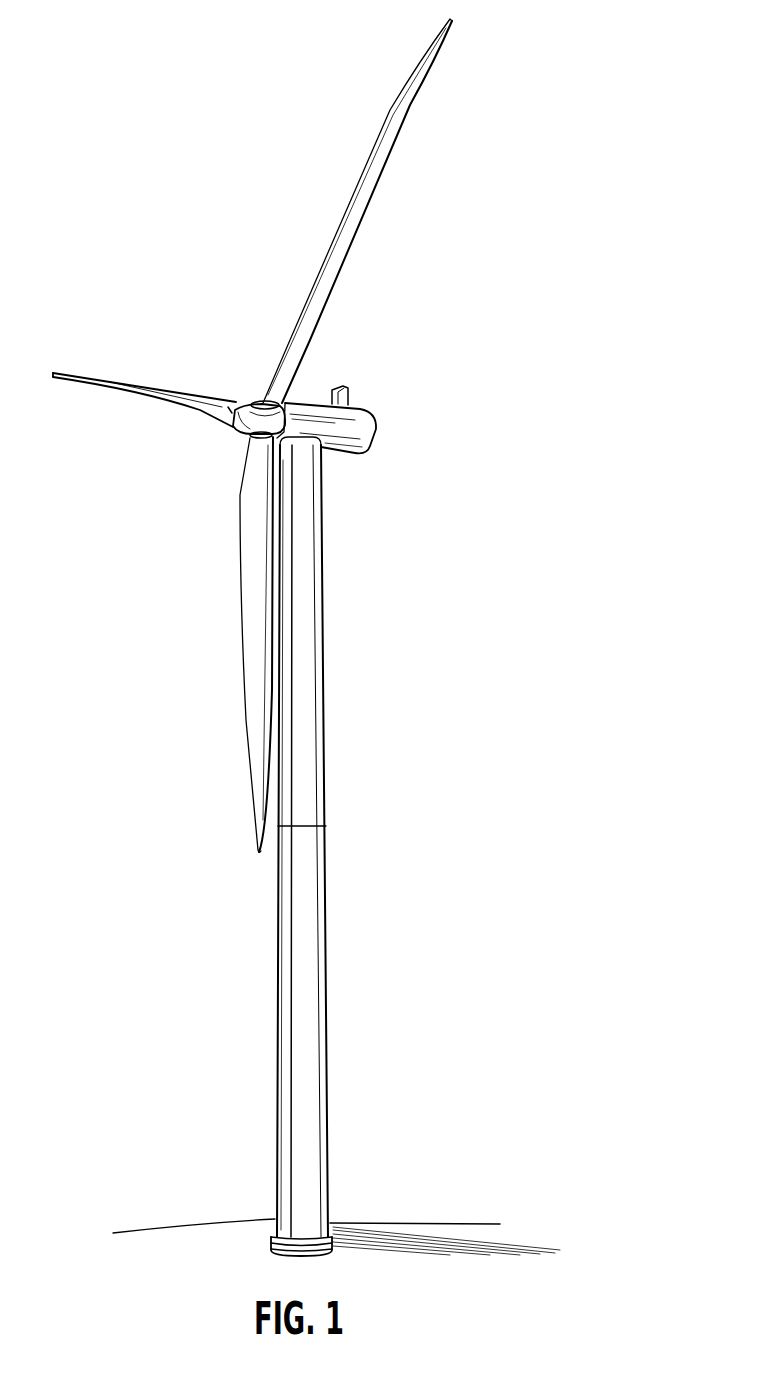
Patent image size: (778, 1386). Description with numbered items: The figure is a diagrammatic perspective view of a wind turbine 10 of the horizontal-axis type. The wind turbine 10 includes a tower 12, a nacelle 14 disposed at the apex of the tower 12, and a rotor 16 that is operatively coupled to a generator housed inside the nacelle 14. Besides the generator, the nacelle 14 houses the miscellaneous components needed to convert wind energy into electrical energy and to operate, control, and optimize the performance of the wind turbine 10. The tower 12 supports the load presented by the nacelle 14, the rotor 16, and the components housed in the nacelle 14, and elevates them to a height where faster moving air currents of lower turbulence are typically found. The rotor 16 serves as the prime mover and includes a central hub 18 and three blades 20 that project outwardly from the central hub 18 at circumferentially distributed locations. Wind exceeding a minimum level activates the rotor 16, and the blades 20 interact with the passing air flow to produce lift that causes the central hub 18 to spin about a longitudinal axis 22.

The wind turbine 10 is at (84, 225).
The tower 12 is at (322, 580).
The nacelle 14 is at (365, 410).
The rotor 16 is at (240, 430).
The central hub 18 is at (252, 401).
The blades 20 is at (99, 379).
The longitudinal axis 22 is at (227, 393).